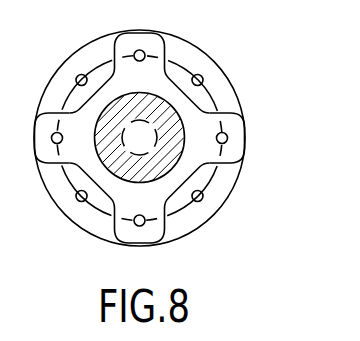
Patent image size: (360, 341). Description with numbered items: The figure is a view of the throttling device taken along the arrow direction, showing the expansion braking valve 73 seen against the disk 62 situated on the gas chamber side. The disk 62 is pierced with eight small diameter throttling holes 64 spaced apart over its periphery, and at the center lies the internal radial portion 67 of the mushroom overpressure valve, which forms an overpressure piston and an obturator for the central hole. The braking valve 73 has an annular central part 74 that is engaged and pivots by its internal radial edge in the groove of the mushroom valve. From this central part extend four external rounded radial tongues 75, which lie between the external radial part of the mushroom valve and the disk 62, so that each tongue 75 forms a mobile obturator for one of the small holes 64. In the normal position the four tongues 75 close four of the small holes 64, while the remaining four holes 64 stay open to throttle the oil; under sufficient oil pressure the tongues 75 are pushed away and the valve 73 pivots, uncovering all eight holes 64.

The disk 62 is at (84, 62).
The small diameter throttling holes 64 is at (77, 83).
The internal radial portion 67 is at (174, 112).
The expansion braking valve 73 is at (166, 74).
The annular central part 74 is at (108, 175).
The external rounded radial tongues 75 is at (228, 149).